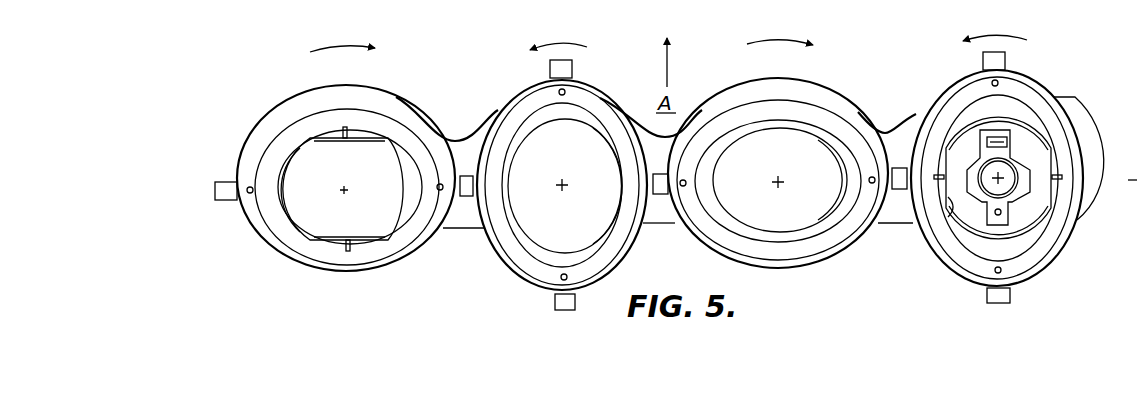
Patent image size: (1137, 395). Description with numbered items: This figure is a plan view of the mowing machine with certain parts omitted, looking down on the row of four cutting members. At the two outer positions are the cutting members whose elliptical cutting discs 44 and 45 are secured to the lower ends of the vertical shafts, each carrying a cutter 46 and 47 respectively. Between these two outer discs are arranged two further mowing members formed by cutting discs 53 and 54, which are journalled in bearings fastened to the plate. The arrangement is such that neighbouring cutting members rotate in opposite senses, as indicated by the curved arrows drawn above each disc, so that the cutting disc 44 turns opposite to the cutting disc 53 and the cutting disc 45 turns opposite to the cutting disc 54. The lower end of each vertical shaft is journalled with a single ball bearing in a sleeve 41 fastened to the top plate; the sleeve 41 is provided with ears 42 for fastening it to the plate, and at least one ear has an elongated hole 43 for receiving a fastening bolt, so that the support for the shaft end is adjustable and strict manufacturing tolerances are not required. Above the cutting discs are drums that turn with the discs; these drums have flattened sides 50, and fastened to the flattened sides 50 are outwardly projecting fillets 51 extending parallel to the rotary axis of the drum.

The sleeve 41 is at (1014, 168).
The ear 42 is at (1003, 211).
The elongated hole 43 is at (998, 140).
The cutting disc 44 is at (304, 262).
The cutting disc 45 is at (1062, 252).
The cutter 46 is at (223, 182).
The cutter 47 is at (1010, 295).
The flattened side 50 is at (372, 233).
The fillet 51 is at (352, 245).
The cutting disc 53 is at (513, 268).
The cutting disc 54 is at (822, 257).